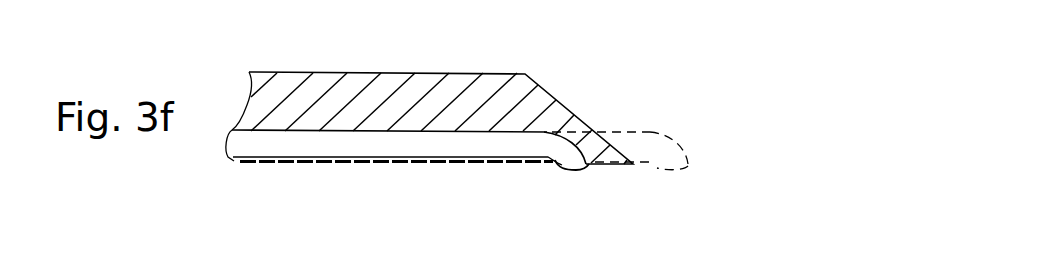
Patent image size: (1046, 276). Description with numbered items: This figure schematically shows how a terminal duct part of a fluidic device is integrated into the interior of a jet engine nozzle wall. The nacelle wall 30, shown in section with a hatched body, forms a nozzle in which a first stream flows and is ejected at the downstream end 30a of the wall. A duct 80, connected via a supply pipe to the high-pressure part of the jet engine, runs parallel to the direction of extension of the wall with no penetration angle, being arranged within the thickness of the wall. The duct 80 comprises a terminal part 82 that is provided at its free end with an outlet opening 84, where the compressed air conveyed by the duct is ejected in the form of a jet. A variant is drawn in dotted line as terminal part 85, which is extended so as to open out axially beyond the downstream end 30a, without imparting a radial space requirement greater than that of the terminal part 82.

The nacelle wall 30 is at (322, 72).
The downstream end of the wall 30a is at (599, 132).
The duct 80 is at (376, 167).
The terminal part 82 is at (527, 167).
The outlet opening 84 is at (577, 171).
The terminal part of the duct (variant) 85 is at (665, 133).